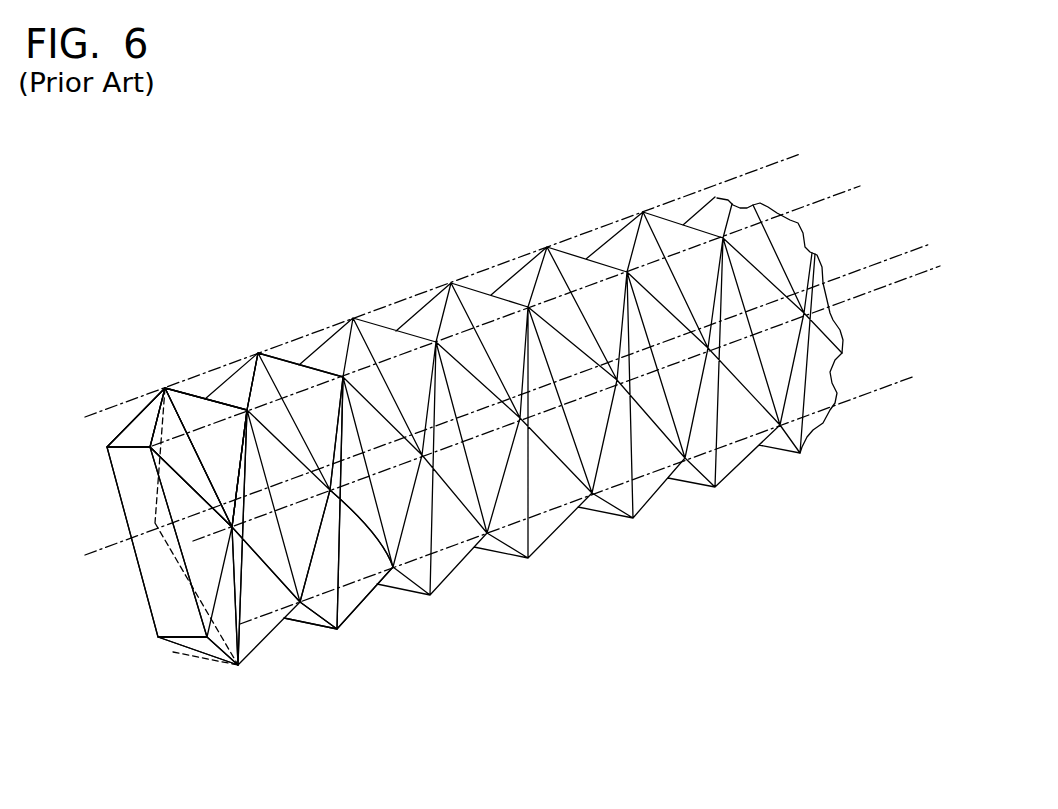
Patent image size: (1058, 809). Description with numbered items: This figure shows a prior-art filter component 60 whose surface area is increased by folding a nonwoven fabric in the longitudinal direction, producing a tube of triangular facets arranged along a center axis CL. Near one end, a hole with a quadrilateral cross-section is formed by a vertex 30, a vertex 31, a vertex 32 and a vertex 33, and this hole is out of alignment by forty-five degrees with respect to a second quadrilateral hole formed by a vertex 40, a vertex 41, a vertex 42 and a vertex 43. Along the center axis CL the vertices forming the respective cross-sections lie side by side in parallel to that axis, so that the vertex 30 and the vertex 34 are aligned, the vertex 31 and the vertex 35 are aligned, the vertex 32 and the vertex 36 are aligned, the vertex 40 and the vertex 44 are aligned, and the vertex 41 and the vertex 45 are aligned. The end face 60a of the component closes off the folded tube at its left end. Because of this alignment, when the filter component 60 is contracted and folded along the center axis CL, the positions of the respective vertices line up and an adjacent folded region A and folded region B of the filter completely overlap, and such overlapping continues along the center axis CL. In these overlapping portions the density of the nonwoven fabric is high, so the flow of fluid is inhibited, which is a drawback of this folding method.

The vertex 30 is at (165, 388).
The vertex 31 is at (252, 553).
The vertex 32 is at (240, 666).
The vertex 33 is at (155, 531).
The vertex 34 is at (258, 353).
The vertex 35 is at (330, 490).
The vertex 36 is at (337, 629).
The vertex 40 is at (150, 447).
The vertex 41 is at (207, 637).
The vertex 42 is at (158, 637).
The vertex 43 is at (107, 447).
The vertex 44 is at (247, 410).
The vertex 45 is at (303, 626).
The filter component 60 is at (316, 345).
The end face of tubular structure 60a is at (175, 596).
The folded region A is at (180, 462).
The folded region B is at (223, 467).
The center axis CL is at (492, 409).